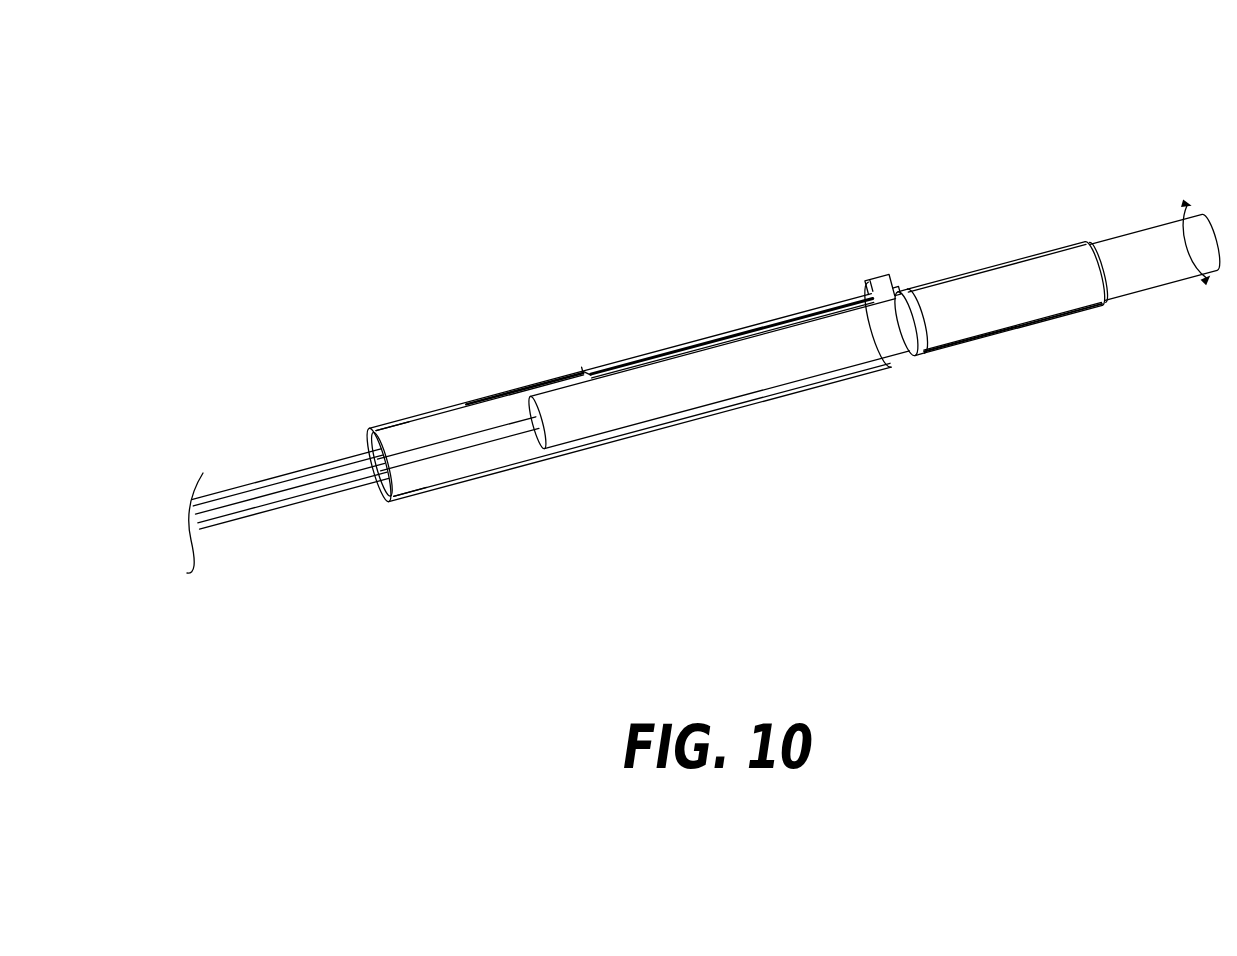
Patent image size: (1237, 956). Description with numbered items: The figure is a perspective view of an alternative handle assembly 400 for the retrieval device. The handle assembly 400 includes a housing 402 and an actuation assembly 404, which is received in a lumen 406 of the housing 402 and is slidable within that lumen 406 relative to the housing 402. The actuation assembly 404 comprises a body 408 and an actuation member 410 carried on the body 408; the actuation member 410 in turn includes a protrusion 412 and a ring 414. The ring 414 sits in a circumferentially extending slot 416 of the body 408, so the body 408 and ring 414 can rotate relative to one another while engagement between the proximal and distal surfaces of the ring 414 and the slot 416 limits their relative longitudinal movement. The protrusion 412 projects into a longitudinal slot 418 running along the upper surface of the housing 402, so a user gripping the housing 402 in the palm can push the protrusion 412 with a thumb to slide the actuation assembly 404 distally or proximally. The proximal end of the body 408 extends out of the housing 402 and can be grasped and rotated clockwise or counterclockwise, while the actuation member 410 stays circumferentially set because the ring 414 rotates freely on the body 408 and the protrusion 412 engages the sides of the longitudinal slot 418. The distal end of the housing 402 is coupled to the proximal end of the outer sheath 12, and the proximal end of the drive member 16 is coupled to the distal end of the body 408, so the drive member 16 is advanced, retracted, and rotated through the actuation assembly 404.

The handle assembly 400 is at (487, 148).
The outer sheath 12 is at (228, 535).
The drive member 16 is at (418, 468).
The housing 402 is at (520, 470).
The actuation assembly 404 is at (612, 415).
The lumen 406 is at (472, 462).
The body 408 is at (713, 383).
The actuation member 410 is at (860, 273).
The protrusion 412 is at (885, 292).
The ring 414 is at (893, 347).
The circumferentially extending slot 416 is at (920, 345).
The longitudinal slot 418 is at (713, 336).